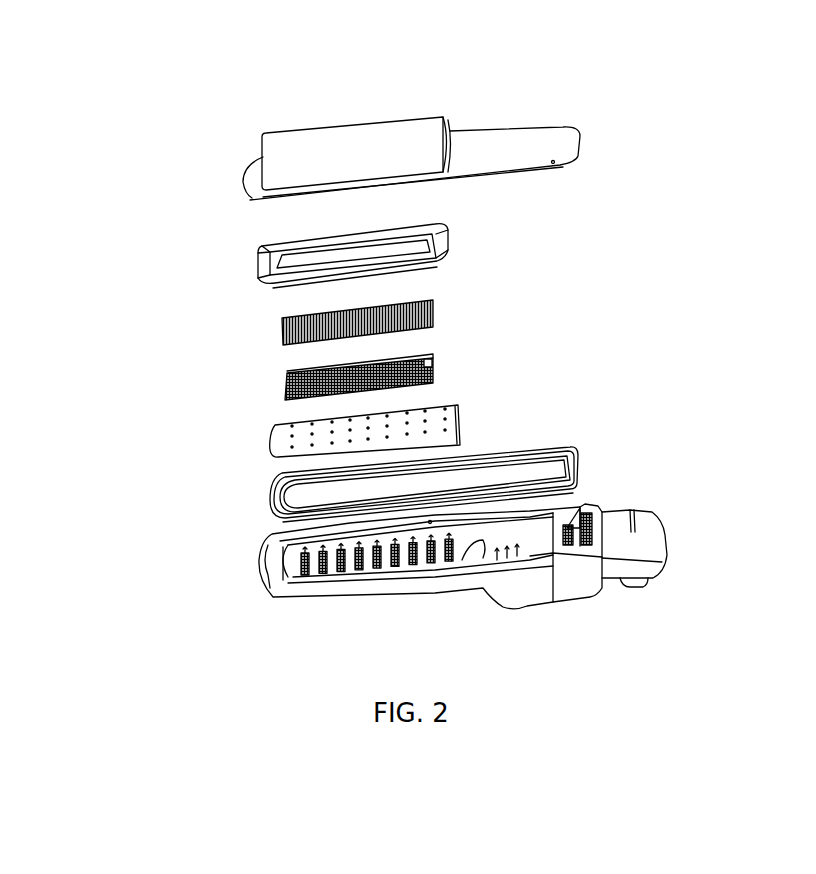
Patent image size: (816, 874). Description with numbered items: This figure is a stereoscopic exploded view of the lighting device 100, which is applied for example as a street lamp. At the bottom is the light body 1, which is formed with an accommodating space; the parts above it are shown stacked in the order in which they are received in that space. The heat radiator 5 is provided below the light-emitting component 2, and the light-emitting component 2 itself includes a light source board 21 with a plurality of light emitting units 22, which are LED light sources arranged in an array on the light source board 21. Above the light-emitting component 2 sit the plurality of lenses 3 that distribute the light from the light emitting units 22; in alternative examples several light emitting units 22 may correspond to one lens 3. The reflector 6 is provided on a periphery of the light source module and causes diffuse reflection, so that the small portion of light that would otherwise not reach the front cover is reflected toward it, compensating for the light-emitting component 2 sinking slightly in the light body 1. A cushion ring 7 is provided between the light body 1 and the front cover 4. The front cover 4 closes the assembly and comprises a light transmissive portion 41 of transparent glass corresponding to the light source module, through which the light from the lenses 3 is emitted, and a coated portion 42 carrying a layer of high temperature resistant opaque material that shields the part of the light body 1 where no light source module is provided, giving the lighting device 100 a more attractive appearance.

The lighting device 100 is at (155, 178).
The light body 1 is at (587, 502).
The light-emitting component 2 is at (466, 344).
The light source board 21 is at (438, 377).
The light emitting unit 22 is at (433, 358).
The lens 3 is at (437, 310).
The front cover 4 is at (429, 109).
The light transmissive portion 41 is at (343, 137).
The coated portion 42 is at (512, 147).
The heat radiator 5 is at (434, 410).
The reflector 6 is at (447, 232).
The cushion ring 7 is at (547, 444).